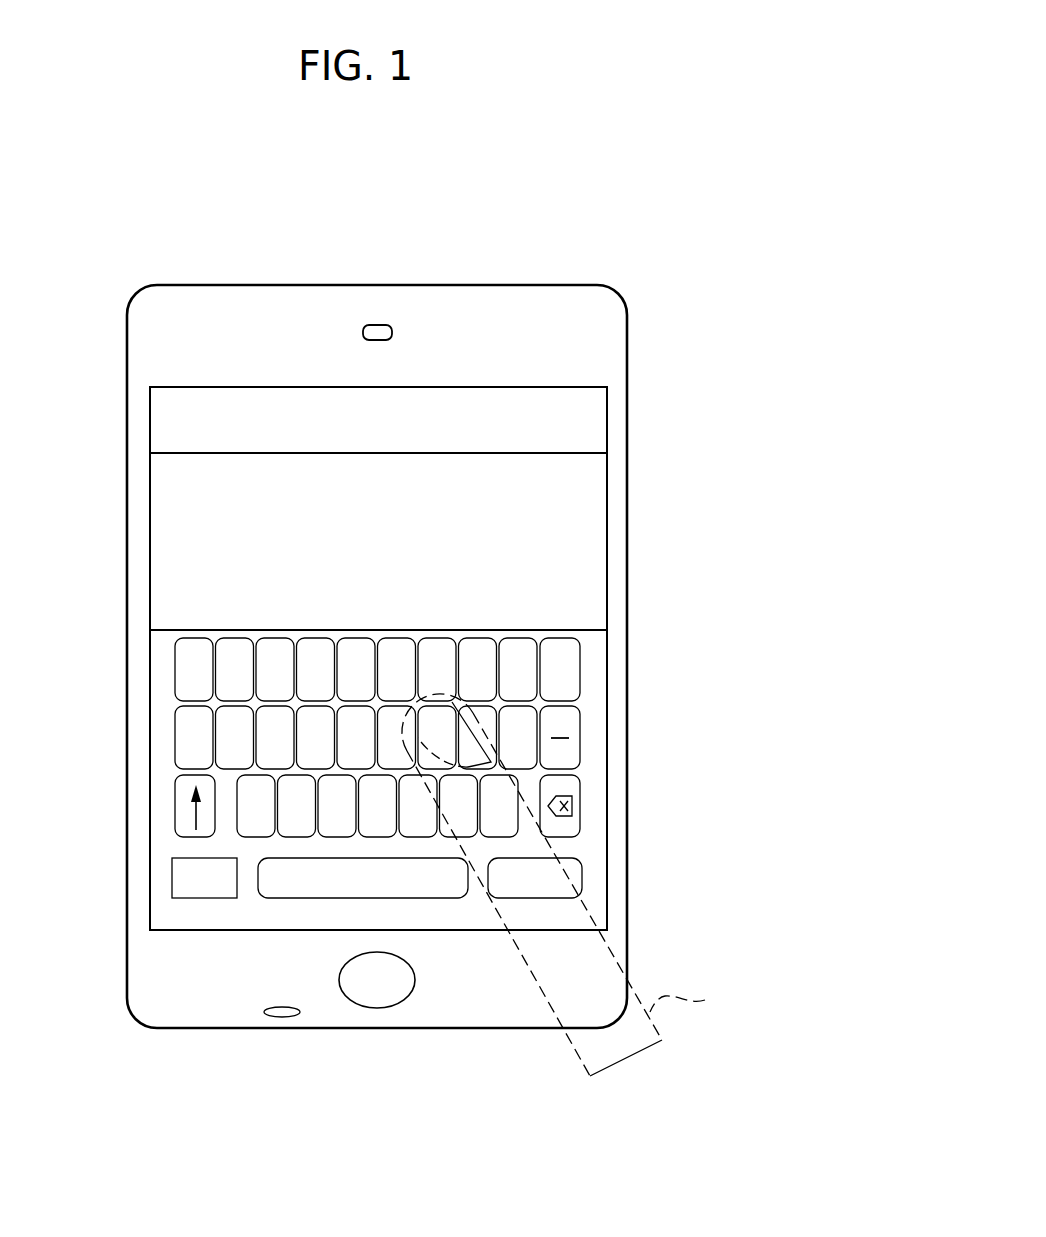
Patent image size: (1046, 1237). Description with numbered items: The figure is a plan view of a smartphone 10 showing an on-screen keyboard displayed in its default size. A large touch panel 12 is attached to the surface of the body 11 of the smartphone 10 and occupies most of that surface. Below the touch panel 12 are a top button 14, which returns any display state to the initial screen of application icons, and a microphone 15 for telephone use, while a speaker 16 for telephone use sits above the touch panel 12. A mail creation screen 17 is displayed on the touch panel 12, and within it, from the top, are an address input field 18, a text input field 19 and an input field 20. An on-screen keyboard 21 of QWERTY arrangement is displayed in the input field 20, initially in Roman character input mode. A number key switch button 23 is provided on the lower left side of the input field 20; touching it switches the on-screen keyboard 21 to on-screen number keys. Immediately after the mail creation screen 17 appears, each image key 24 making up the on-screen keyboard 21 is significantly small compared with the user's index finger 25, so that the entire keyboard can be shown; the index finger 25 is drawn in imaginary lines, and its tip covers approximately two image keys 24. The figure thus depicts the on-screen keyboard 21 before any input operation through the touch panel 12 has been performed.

The smartphone 10 is at (461, 280).
The body 11 is at (185, 1030).
The touch panel 12 is at (614, 411).
The top button 14 is at (376, 1000).
The microphone 15 is at (282, 1017).
The speaker 16 is at (376, 325).
The mail creation screen 17 is at (614, 534).
The address input field 18 is at (480, 410).
The text input field 19 is at (165, 552).
The input field 20 is at (395, 773).
The on-screen keyboard 21 is at (586, 734).
The number key switch button 23 is at (178, 883).
The image key 24 is at (572, 669).
The index finger 25 is at (705, 1000).